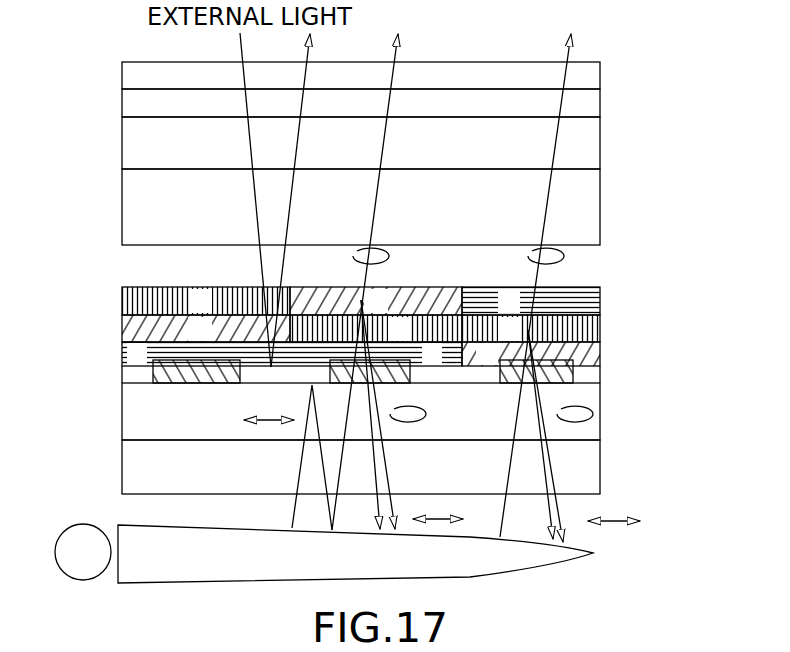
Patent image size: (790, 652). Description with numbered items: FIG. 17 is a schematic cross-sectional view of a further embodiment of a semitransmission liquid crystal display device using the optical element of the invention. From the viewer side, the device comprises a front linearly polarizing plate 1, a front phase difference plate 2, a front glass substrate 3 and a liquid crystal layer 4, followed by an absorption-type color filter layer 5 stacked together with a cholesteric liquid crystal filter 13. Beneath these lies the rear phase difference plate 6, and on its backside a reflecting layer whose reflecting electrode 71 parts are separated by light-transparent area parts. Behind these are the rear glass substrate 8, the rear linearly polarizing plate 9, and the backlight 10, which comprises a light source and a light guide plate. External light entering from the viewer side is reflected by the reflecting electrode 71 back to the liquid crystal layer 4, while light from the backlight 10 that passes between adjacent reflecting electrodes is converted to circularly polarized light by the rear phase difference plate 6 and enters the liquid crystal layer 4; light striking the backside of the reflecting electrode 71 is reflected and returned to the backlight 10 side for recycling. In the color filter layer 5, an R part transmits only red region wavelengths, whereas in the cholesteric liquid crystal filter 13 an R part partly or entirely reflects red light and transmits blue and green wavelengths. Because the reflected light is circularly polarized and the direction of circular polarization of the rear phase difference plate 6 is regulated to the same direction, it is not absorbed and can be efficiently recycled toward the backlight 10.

The front linearly polarizing plate 1 is at (602, 82).
The front phase difference plate 2 is at (602, 110).
The front glass substrate 3 is at (602, 148).
The liquid crystal layer 4 is at (602, 208).
The color filter layer 5 is at (602, 302).
The rear phase difference plate 6 is at (602, 357).
The reflecting electrode 71 is at (602, 378).
The rear glass substrate 8 is at (602, 415).
The rear linearly polarizing plate 9 is at (602, 460).
The backlight 10 is at (596, 555).
The cholesteric liquid crystal filter 13 is at (112, 318).